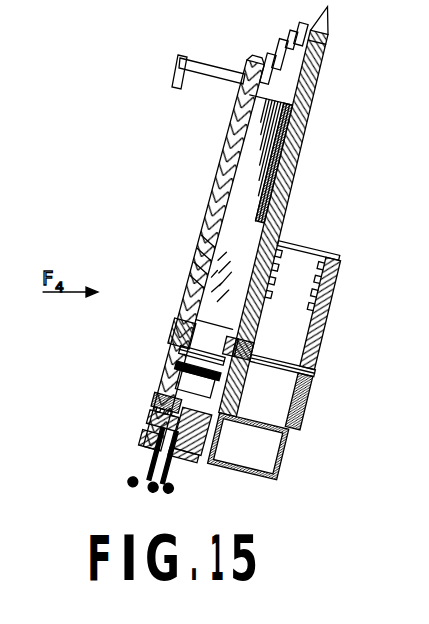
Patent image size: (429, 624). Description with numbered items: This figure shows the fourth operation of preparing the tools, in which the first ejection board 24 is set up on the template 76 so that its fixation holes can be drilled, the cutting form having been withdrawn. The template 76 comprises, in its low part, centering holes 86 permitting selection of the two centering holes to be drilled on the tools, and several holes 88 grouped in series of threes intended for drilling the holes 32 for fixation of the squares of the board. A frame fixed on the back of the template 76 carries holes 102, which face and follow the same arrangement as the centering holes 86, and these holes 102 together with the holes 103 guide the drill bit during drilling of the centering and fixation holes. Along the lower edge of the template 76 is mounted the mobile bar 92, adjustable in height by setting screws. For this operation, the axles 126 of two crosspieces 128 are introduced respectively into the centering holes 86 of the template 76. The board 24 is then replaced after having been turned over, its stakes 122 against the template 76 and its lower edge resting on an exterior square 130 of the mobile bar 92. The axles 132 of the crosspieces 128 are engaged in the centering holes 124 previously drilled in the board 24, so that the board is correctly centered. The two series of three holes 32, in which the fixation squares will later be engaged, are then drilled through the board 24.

The first ejection board 24 is at (240, 128).
The stakes 122 is at (237, 200).
The pre-drilled holes 32 is at (180, 272).
The centering holes 124 is at (186, 316).
The axles 132 is at (186, 342).
The crosspieces 128 is at (176, 366).
The mobile bar 92 is at (153, 418).
The exterior square 130 is at (143, 445).
The template 76 is at (307, 62).
The holes 88 is at (316, 283).
The holes 103 is at (335, 308).
The centering holes 86 is at (240, 350).
The axles 126 is at (310, 358).
The holes 102 is at (310, 387).